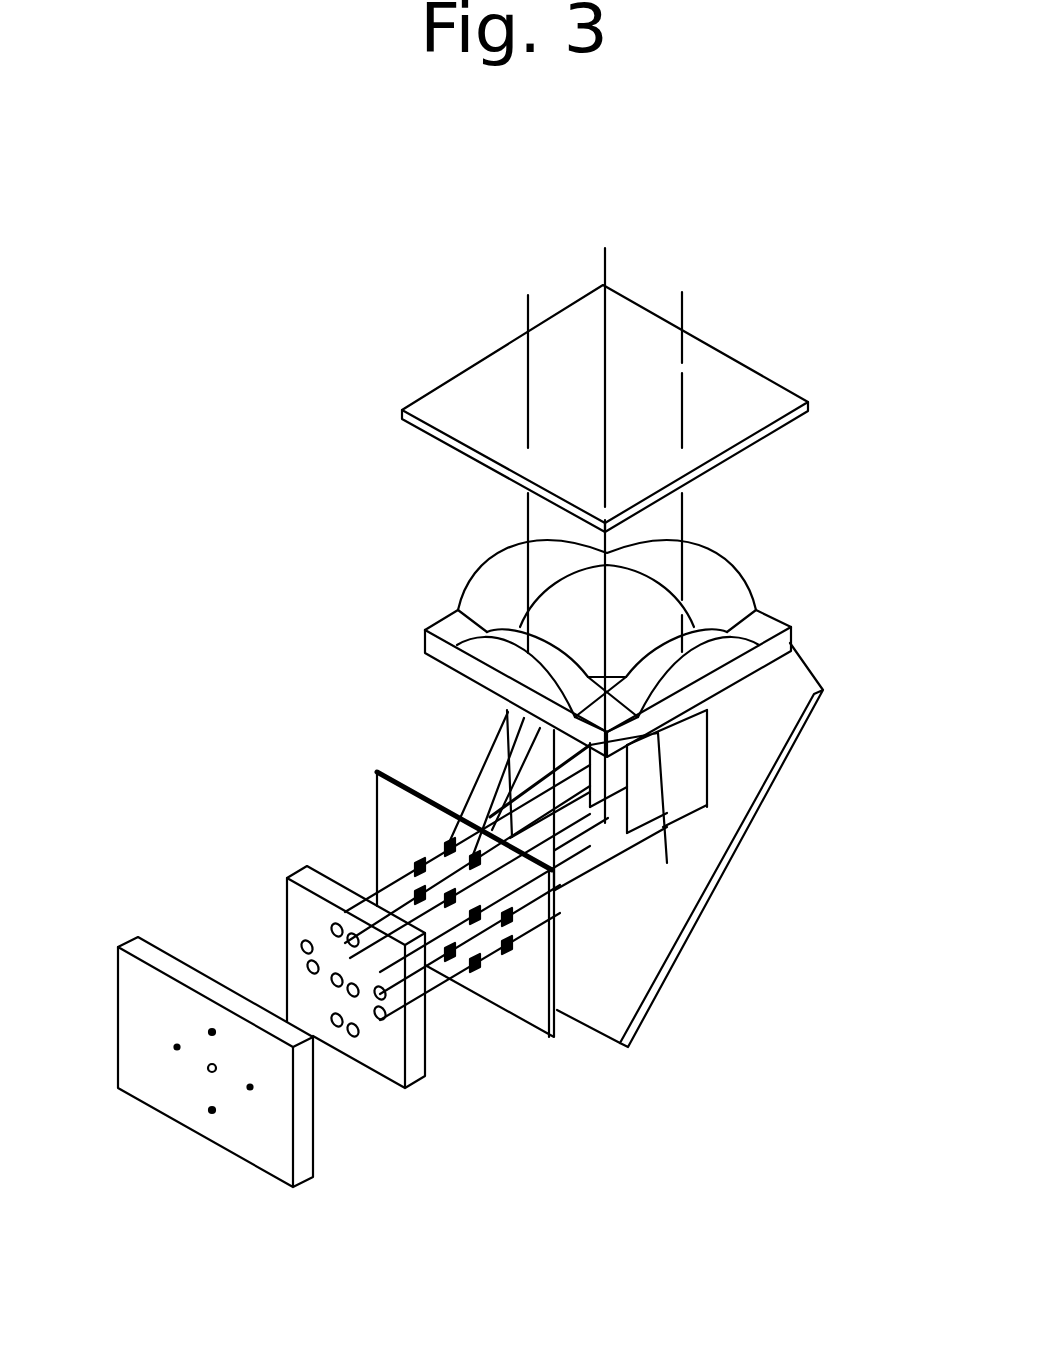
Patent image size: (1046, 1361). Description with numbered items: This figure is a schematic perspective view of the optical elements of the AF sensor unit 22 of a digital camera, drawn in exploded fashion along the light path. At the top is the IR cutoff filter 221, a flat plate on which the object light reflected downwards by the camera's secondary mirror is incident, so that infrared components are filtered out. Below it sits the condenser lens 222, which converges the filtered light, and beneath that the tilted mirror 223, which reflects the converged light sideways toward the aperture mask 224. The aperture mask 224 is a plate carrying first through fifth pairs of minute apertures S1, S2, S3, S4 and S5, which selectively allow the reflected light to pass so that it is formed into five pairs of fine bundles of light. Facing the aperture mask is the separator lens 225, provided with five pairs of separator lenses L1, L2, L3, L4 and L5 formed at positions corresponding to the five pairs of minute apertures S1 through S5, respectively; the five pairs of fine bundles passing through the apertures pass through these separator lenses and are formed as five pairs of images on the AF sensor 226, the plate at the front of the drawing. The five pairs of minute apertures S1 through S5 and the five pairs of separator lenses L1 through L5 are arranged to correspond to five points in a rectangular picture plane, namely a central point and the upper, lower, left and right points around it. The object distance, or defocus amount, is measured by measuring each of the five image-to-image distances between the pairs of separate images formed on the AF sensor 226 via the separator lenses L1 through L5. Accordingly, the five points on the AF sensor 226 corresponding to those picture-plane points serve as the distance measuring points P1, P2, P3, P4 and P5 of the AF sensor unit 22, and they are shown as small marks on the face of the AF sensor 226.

The AF sensor unit 22 is at (838, 355).
The IR cutoff filter 221 is at (462, 393).
The condenser lens 222 is at (720, 590).
The mirror 223 is at (722, 836).
The aperture mask 224 is at (519, 924).
The separator lens 225 is at (365, 1010).
The AF sensor 226 is at (189, 1100).
The first pair of minute apertures S1 is at (445, 852).
The second pair of minute apertures S2 is at (412, 872).
The third pair of minute apertures S3 is at (520, 935).
The fourth pair of minute apertures S4 is at (472, 852).
The fifth pair of minute apertures S5 is at (470, 975).
The pair of separator lenses L1 is at (330, 928).
The pair of separator lenses L2 is at (303, 958).
The pair of separator lenses L3 is at (386, 1008).
The pair of separator lenses L4 is at (340, 920).
The pair of separator lenses L5 is at (347, 1037).
The distance measuring point P1 is at (208, 1070).
The distance measuring point P2 is at (177, 1047).
The distance measuring point P3 is at (250, 1090).
The distance measuring point P4 is at (212, 1032).
The distance measuring point P5 is at (212, 1112).